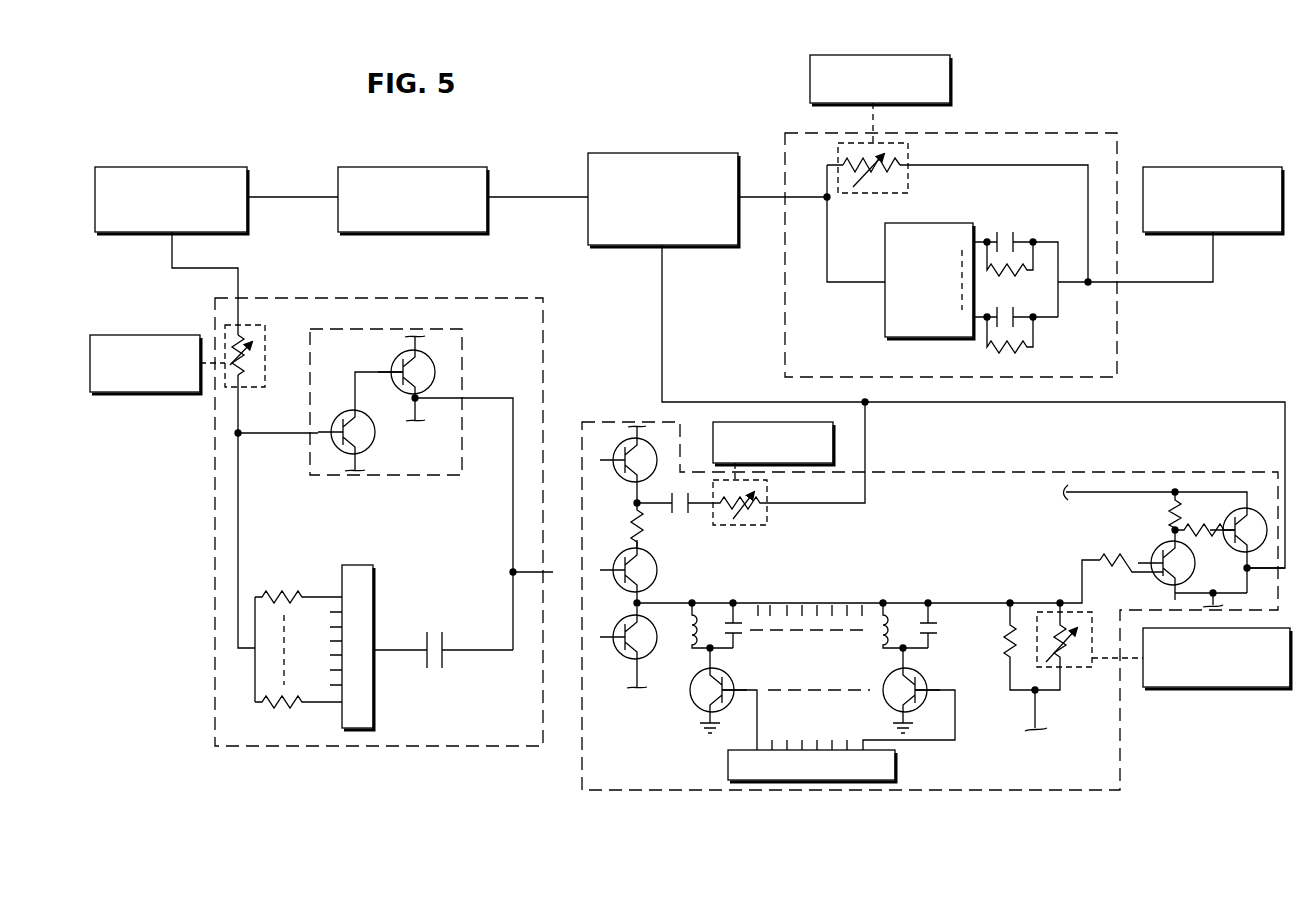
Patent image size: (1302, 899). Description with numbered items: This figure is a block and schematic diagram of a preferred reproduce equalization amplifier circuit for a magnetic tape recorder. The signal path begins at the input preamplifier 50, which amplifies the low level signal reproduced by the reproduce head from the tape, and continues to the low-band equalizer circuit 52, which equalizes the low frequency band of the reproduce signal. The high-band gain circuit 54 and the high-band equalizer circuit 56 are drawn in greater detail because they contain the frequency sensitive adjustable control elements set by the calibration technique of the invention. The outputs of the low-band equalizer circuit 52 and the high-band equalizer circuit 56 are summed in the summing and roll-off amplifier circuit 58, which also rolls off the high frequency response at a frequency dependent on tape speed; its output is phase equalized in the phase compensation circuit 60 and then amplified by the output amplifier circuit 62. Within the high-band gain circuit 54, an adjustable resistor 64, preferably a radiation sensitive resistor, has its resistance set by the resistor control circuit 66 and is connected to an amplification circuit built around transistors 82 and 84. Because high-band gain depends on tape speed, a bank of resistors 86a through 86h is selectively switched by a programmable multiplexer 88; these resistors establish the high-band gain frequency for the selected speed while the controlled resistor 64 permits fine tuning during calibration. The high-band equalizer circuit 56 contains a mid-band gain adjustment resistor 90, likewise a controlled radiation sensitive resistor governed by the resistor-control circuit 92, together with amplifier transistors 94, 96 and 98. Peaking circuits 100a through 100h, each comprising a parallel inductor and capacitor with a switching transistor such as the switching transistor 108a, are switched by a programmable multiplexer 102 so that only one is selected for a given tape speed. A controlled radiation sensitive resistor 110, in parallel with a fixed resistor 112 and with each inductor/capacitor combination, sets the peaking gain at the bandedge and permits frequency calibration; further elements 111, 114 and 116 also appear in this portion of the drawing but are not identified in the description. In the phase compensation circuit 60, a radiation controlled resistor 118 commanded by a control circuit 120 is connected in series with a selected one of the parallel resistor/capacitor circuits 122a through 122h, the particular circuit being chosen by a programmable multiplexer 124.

The input preamplifier 50 is at (167, 167).
The low-band equalizer circuit 52 is at (412, 167).
The high-band gain circuit 54 is at (215, 719).
The high-band equalizer circuit 56 is at (580, 745).
The summing and roll-off amplifier circuit 58 is at (651, 153).
The phase compensation circuit 60 is at (1065, 133).
The output amplifier circuit 62 is at (1206, 167).
The adjustable resistor 64 is at (266, 372).
The resistor control circuit 66 is at (138, 335).
The transistor 82 is at (375, 440).
The transistor 84 is at (398, 360).
The resistor 86a is at (288, 591).
The resistor 86h is at (288, 708).
The programmable multiplexer 88 is at (376, 714).
The mid-band gain adjustment resistor 90 is at (770, 523).
The resistor-control circuit 92 is at (833, 443).
The amplifier transistor 94 is at (621, 453).
The amplifier transistor 96 is at (658, 572).
The amplifier transistor 98 is at (622, 652).
The peaking circuit 100a is at (750, 635).
The peaking circuit 100h is at (872, 634).
The programmable multiplexer 102 is at (898, 766).
The switching transistor 108a is at (691, 688).
The controlled radiation sensitive resistor 110 is at (1005, 613).
The variable resistor 111 is at (1062, 655).
The fixed resistor 112 is at (1212, 690).
The transistor 114 is at (1167, 544).
The transistor 116 is at (1230, 546).
The radiation controlled resistor 118 is at (876, 193).
The control circuit 120 is at (950, 78).
The parallel resistor/capacitor circuit 122a is at (1012, 232).
The parallel resistor/capacitor circuit 122h is at (1025, 347).
The programmable multiplexer 124 is at (885, 318).